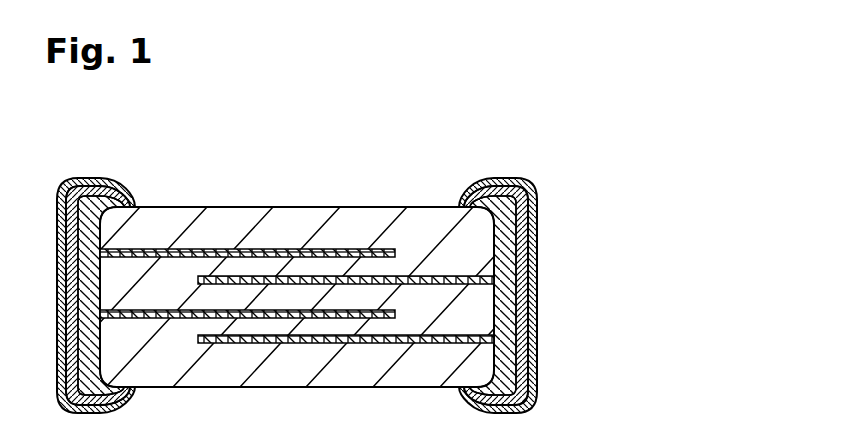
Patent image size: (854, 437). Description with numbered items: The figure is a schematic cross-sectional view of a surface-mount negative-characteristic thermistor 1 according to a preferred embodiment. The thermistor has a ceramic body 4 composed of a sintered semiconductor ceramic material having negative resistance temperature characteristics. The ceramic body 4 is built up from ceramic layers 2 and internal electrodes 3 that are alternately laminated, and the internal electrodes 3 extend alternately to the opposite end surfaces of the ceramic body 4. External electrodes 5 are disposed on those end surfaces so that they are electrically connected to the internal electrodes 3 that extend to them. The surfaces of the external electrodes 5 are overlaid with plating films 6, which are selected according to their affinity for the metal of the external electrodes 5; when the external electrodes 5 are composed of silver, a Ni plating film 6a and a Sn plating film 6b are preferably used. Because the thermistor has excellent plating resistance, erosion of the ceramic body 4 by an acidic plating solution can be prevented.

The surface-mount negative-characteristic thermistor 1 is at (343, 247).
The ceramic layers 2 is at (303, 239).
The internal electrodes 3 is at (210, 252).
The ceramic body 4 is at (163, 207).
The external electrodes 5 is at (528, 340).
The plating films 6 is at (372, 295).
The Ni plating film 6a is at (538, 257).
The Sn plating film 6b is at (538, 232).